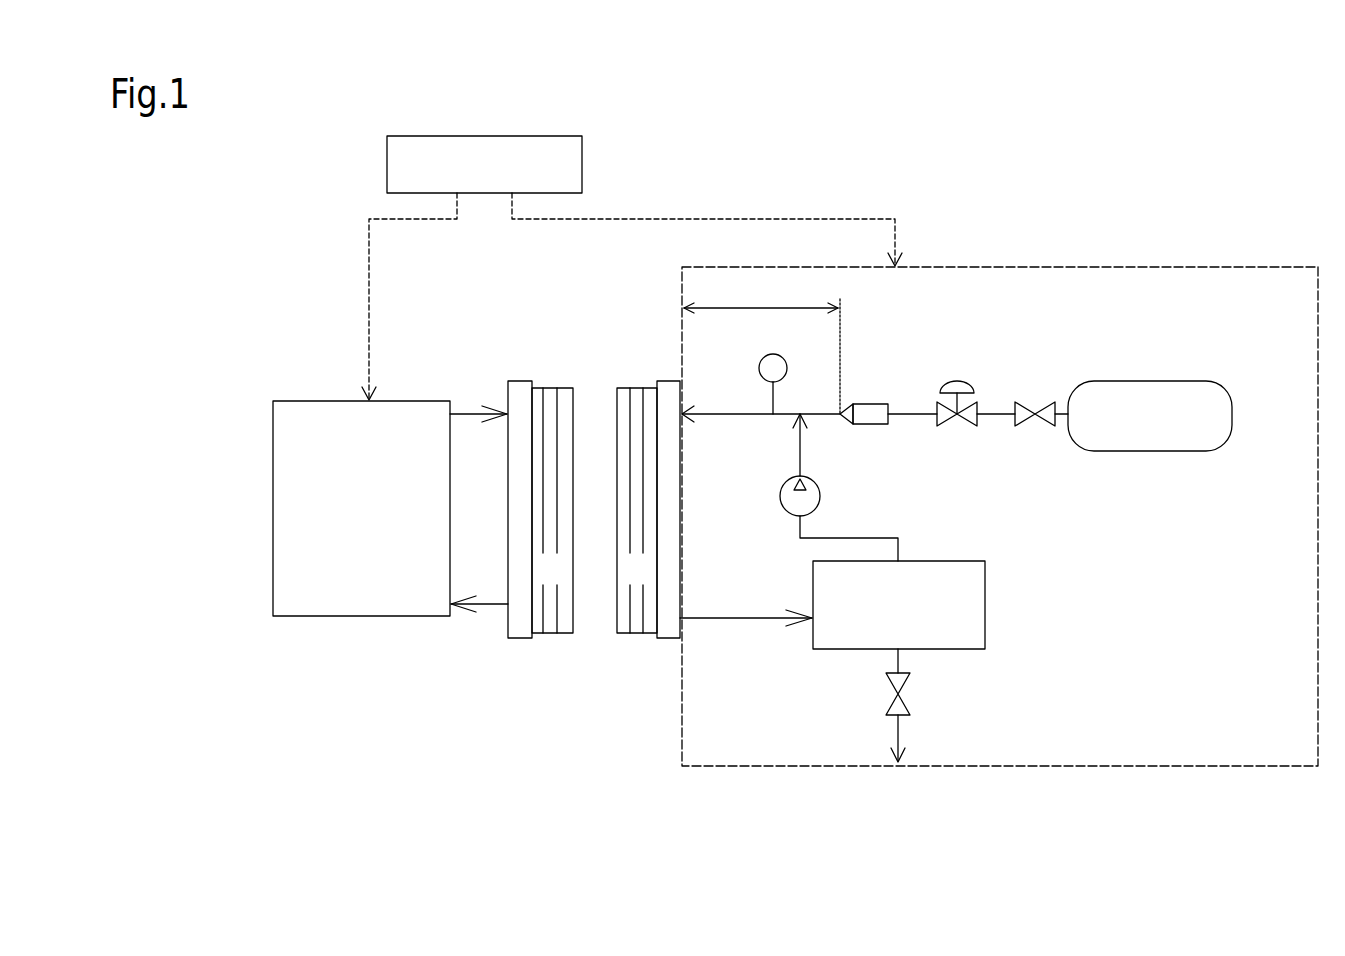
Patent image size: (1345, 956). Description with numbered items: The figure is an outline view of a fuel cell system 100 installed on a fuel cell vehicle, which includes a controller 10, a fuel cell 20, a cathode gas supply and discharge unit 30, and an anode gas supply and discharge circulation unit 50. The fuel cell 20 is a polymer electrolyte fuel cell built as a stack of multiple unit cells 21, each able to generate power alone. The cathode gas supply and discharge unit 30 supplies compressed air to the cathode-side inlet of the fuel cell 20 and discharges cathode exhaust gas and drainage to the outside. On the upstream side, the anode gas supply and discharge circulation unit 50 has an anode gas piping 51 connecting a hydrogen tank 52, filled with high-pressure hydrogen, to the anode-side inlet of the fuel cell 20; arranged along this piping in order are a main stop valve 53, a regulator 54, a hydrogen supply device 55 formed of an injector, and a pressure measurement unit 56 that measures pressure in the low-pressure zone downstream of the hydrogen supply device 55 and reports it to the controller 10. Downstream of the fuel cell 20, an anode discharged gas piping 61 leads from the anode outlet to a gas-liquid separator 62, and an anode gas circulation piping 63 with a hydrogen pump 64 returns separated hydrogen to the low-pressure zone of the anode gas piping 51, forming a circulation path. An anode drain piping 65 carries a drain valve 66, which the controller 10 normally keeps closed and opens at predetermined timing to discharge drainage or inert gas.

The fuel cell system 100 is at (1114, 124).
The controller 10 is at (522, 135).
The fuel cell 20 is at (594, 475).
The unit cell 21 is at (549, 393).
The cathode gas supply and discharge unit 30 is at (320, 400).
The anode gas supply and discharge circulation unit 50 is at (1088, 266).
The anode gas piping 51 is at (903, 412).
The hydrogen tank 52 is at (1128, 381).
The main stop valve 53 is at (1025, 401).
The regulator 54 is at (960, 381).
The hydrogen supply device 55 is at (878, 425).
The pressure measurement unit 56 is at (788, 359).
The anode discharged gas piping 61 is at (768, 620).
The gas-liquid separator 62 is at (925, 560).
The anode gas circulation piping 63 is at (828, 536).
The hydrogen pump 64 is at (818, 482).
The anode drain piping 65 is at (905, 728).
The drain valve 66 is at (905, 700).